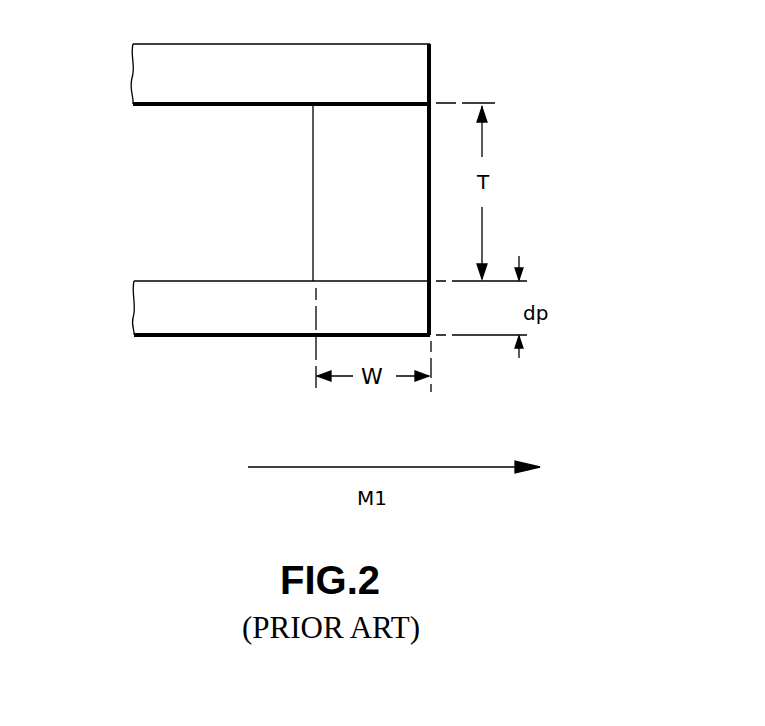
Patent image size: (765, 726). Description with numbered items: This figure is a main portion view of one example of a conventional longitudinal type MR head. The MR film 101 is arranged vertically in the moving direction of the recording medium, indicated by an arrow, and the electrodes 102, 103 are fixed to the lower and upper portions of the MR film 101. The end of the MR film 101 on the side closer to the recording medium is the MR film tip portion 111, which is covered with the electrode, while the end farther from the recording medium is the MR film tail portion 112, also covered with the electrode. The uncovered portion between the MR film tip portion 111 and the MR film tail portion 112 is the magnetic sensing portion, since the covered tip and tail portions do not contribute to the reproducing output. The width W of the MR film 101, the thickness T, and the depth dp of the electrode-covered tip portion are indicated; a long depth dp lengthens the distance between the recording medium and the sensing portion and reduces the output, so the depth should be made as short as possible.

The MR film 101 is at (326, 190).
The electrode 102 is at (156, 315).
The electrode 103 is at (190, 90).
The MR film tip portion 111 is at (313, 319).
The MR film tail portion 112 is at (410, 66).